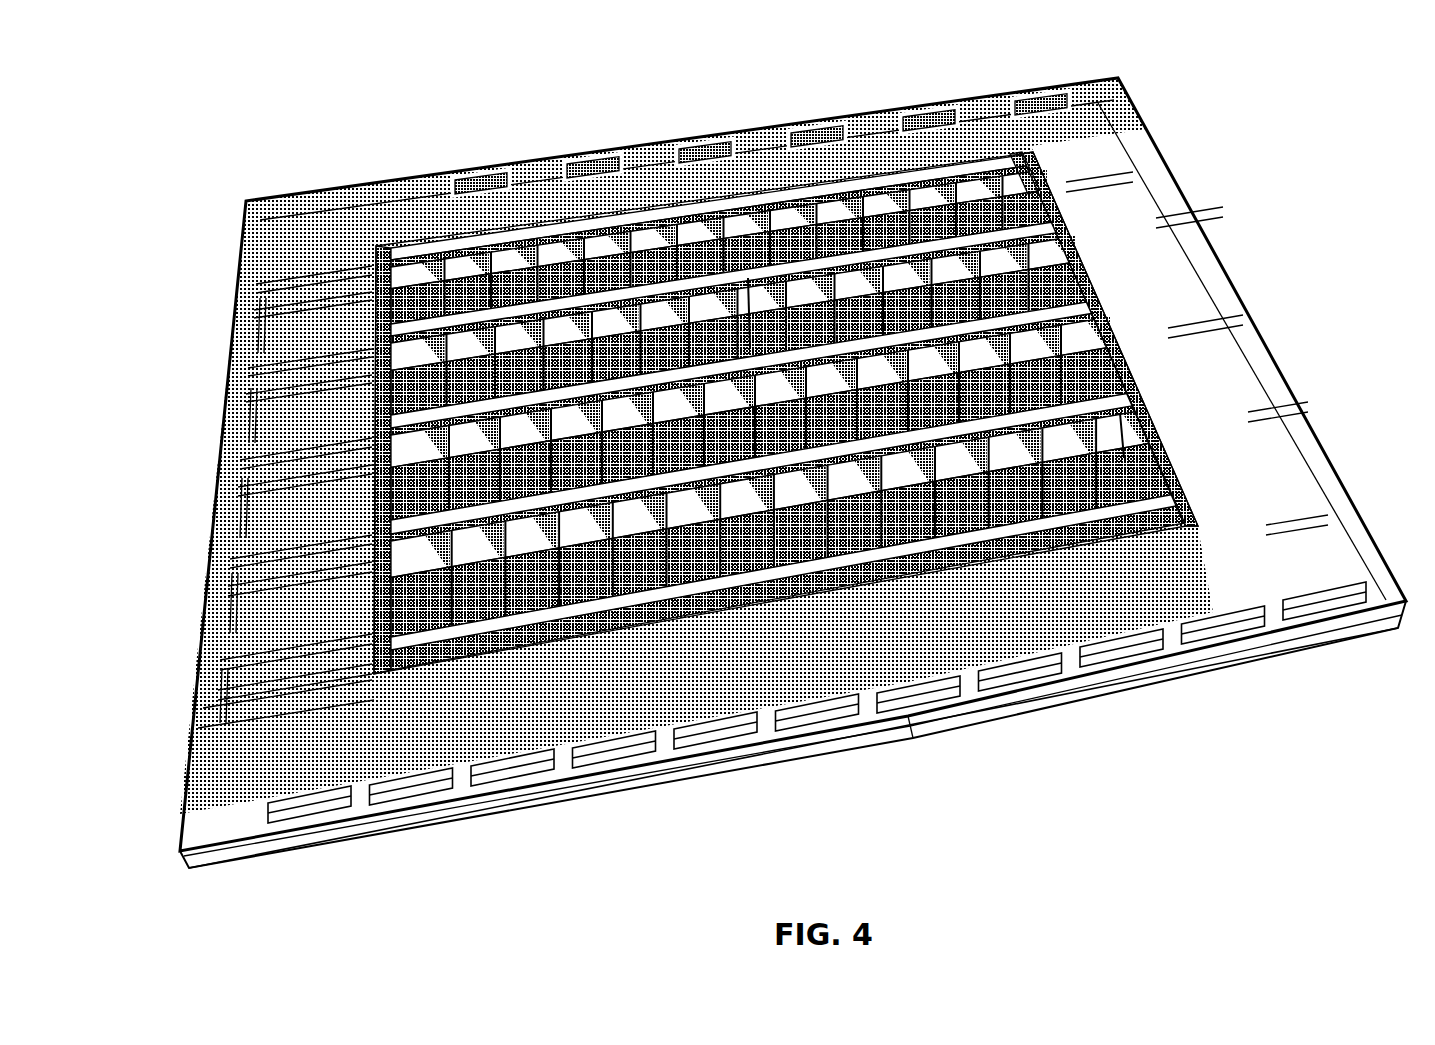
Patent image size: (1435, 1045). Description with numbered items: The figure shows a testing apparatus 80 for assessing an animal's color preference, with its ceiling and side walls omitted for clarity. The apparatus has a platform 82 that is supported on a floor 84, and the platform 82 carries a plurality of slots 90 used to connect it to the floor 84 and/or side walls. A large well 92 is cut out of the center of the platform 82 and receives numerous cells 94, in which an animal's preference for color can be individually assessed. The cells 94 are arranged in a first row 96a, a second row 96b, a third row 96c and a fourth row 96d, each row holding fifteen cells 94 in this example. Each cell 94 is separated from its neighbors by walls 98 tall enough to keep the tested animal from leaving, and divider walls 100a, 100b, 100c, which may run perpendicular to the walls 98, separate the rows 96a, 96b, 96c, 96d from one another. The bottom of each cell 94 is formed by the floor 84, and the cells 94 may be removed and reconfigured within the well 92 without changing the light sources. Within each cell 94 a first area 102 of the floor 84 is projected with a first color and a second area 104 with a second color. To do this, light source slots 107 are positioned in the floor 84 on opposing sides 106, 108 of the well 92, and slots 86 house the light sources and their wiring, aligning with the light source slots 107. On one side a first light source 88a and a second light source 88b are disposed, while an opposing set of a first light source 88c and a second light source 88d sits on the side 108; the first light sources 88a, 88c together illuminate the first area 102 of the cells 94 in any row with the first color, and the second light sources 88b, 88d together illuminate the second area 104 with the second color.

The testing apparatus 80 is at (290, 75).
The platform 82 is at (1331, 533).
The floor 84 is at (1309, 626).
The slots 86 is at (773, 359).
The first light source 88a is at (365, 353).
The second light source 88b is at (366, 260).
The first light source 88c is at (1062, 172).
The second light source 88d is at (1150, 215).
The slots 90 is at (405, 185).
The well 92 is at (795, 170).
The cells 94 is at (992, 183).
The first row 96a is at (373, 610).
The second row 96b is at (370, 500).
The third row 96c is at (373, 403).
The fourth row 96d is at (378, 316).
The walls 98 is at (950, 500).
The divider wall 100a is at (1105, 397).
The divider wall 100b is at (1065, 307).
The divider wall 100c is at (1030, 224).
The first area 102 is at (680, 245).
The second area 104 is at (735, 320).
The side 106 is at (207, 418).
The light source slots 107 is at (222, 710).
The side 108 is at (1262, 326).